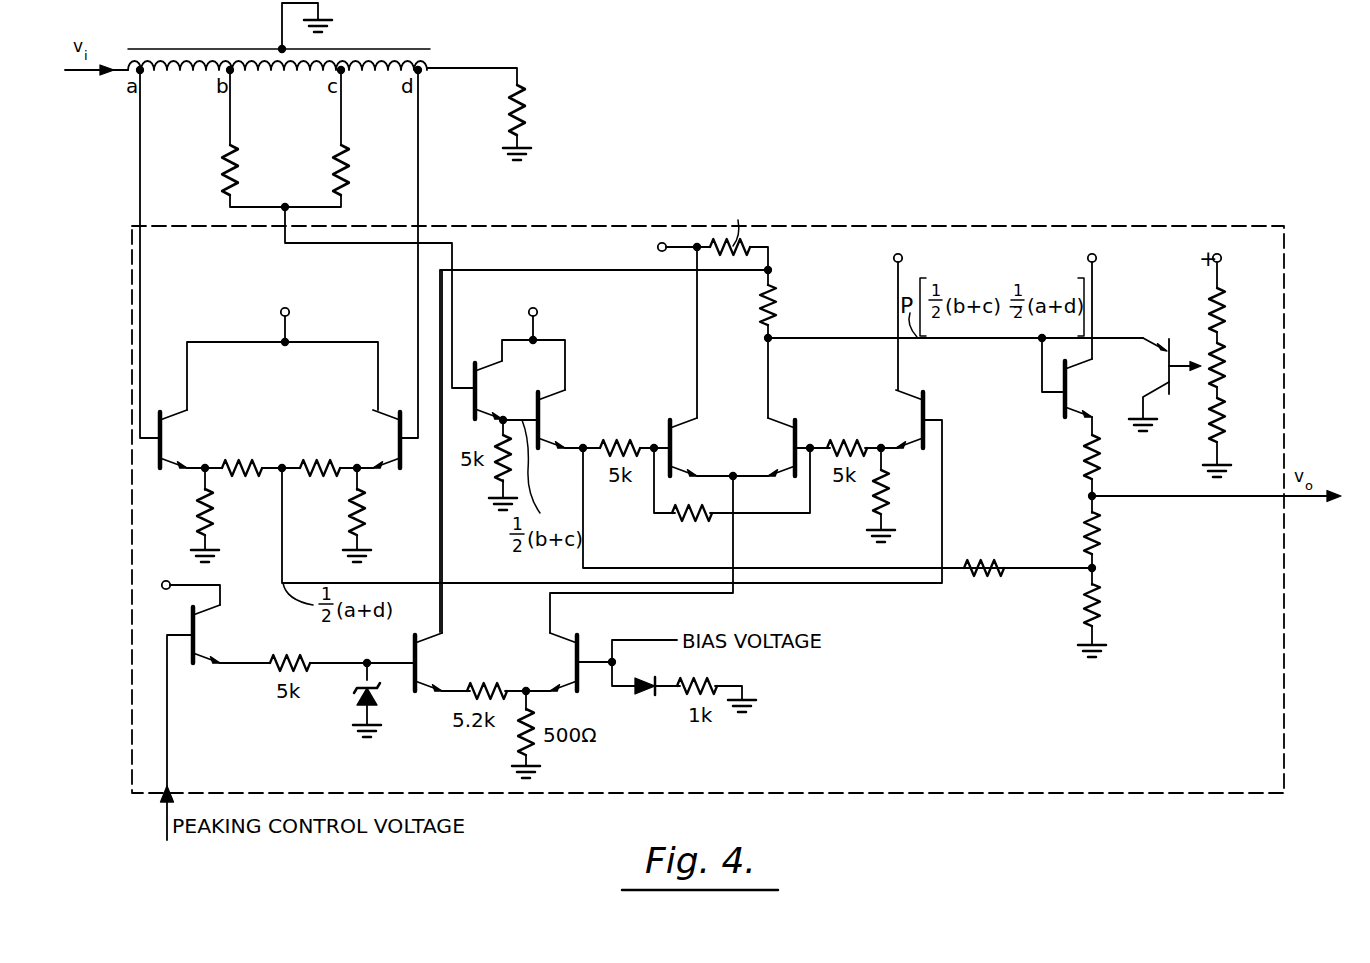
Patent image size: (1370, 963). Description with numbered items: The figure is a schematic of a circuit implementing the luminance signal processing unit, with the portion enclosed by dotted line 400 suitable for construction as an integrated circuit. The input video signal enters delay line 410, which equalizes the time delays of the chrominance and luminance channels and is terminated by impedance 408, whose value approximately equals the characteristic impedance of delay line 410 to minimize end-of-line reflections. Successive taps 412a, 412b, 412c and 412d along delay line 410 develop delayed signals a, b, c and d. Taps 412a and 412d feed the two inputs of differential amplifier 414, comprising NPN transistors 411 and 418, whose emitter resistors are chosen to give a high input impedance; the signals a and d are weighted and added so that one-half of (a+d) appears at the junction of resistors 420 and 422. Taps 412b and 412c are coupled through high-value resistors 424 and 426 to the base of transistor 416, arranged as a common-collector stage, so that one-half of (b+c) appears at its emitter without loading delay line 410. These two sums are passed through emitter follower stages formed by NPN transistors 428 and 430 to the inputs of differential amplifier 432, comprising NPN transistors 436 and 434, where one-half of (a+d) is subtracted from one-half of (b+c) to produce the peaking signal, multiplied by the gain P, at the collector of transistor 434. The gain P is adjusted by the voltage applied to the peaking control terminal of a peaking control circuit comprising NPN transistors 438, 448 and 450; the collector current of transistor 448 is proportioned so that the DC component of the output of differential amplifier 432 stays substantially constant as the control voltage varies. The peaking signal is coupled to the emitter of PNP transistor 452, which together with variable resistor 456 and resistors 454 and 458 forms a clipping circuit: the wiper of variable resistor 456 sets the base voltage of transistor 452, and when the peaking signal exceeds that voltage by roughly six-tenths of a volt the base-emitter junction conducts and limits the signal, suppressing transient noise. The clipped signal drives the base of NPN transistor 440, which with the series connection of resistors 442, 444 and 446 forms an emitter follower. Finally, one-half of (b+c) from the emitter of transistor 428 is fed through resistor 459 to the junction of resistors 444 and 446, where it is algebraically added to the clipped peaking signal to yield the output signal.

The dotted line 400 is at (880, 226).
The impedance 408 is at (528, 105).
The delay line 410 is at (432, 63).
The NPN transistor 411 is at (203, 449).
The tap 412a is at (142, 127).
The tap 412b is at (232, 127).
The tap 412c is at (343, 127).
The tap 412d is at (420, 127).
The differential amplifier 414 is at (303, 404).
The transistor 416 is at (520, 401).
The NPN transistor 418 is at (388, 449).
The resistor 420 is at (250, 478).
The resistor 422 is at (318, 478).
The resistor 424 is at (221, 158).
The resistor 426 is at (350, 163).
The NPN transistor 428 is at (588, 431).
The NPN transistor 430 is at (911, 428).
The differential amplifier 432 is at (757, 418).
The NPN transistor 434 is at (782, 457).
The NPN transistor 436 is at (720, 457).
The NPN transistor 438 is at (567, 672).
The NPN transistor 440 is at (1120, 407).
The resistor 442 is at (1104, 456).
The resistor 444 is at (1104, 532).
The resistor 446 is at (1104, 604).
The NPN transistor 448 is at (466, 672).
The NPN transistor 450 is at (244, 646).
The PNP transistor 452 is at (1156, 374).
The resistor 454 is at (1242, 310).
The variable resistor 456 is at (1242, 365).
The resistor 458 is at (1242, 420).
The resistor 459 is at (984, 580).